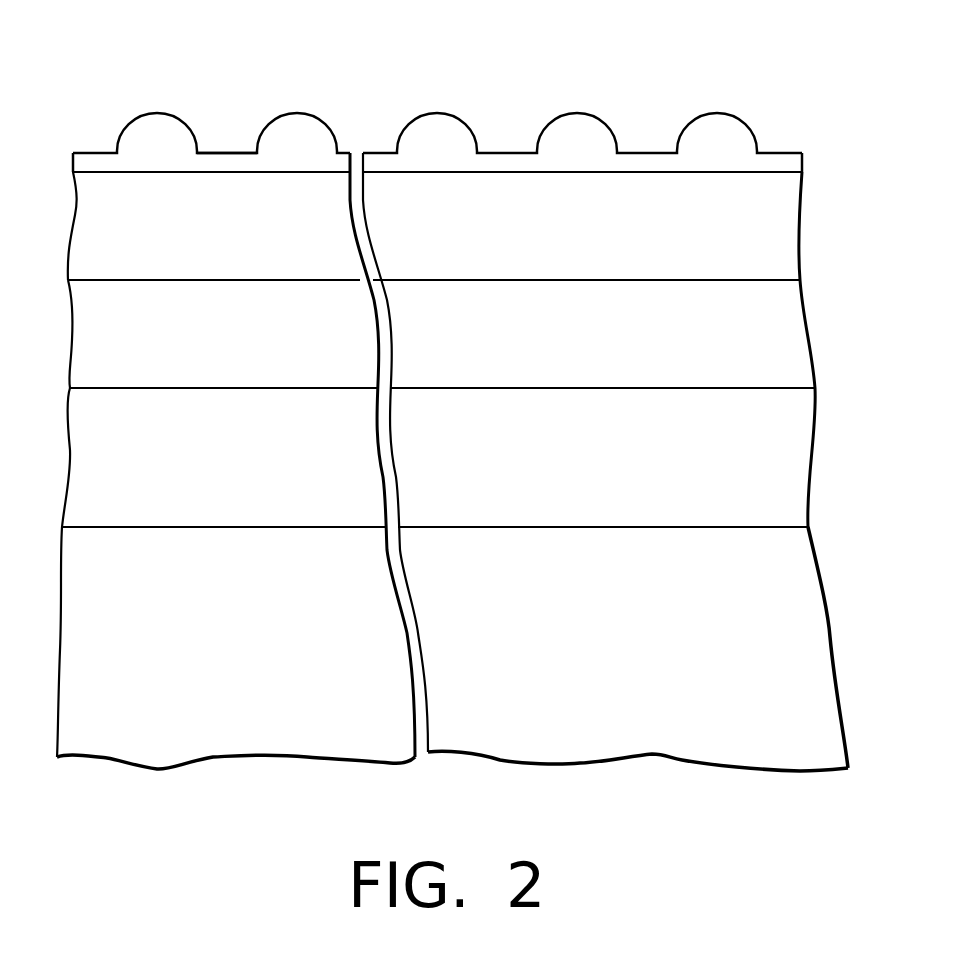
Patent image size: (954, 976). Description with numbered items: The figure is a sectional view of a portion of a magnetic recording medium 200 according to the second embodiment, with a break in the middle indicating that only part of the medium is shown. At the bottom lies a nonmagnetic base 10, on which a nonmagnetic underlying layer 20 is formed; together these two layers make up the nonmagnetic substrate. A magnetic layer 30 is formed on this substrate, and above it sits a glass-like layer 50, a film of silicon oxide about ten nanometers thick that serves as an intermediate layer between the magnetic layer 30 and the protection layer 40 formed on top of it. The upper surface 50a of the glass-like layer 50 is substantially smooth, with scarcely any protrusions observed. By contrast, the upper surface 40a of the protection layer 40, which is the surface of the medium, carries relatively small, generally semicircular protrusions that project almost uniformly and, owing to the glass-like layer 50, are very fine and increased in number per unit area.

The magnetic recording medium 200 is at (633, 762).
The nonmagnetic base 10 is at (831, 630).
The nonmagnetic underlying layer 20 is at (816, 398).
The magnetic layer 30 is at (813, 330).
The protection layer 40 is at (803, 160).
The upper surface of the protection layer 40a is at (228, 152).
The glass-like layer 50 is at (801, 232).
The upper surface of the glass-like layer 50a is at (88, 153).